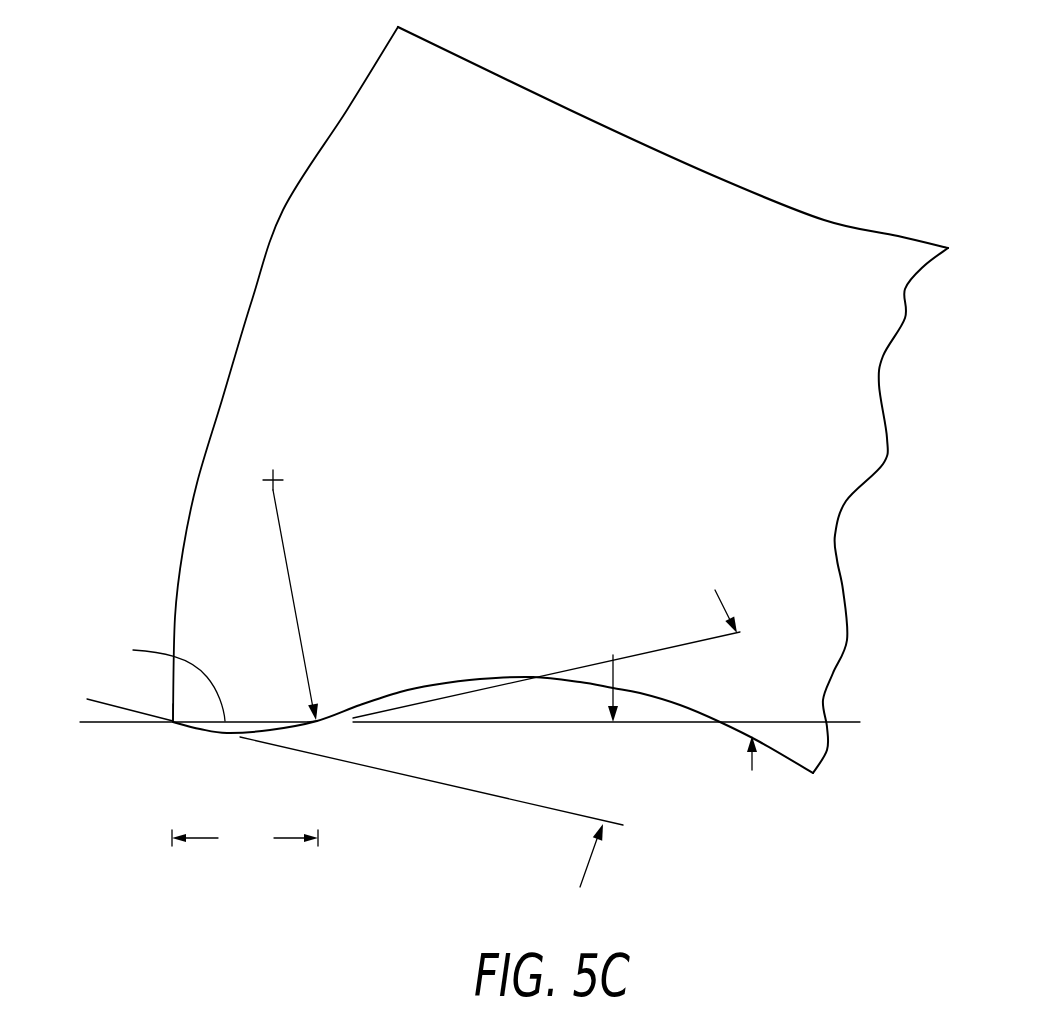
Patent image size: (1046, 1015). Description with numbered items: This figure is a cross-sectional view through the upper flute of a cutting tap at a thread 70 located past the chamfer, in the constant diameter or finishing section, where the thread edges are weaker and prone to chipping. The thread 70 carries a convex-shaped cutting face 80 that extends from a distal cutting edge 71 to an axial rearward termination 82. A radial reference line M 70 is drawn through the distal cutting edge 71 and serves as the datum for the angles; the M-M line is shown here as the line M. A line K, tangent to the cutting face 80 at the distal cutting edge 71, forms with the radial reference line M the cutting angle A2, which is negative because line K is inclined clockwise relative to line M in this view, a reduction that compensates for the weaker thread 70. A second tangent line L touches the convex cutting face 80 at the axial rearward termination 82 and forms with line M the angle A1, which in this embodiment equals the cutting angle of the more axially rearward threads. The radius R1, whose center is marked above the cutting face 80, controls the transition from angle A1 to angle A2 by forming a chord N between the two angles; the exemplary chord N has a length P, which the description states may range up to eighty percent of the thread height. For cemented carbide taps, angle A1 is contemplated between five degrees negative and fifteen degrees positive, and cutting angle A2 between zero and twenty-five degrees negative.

The thread 70 is at (378, 87).
The distal cutting edge 71 is at (171, 727).
The convex-shaped cutting face 80 is at (220, 731).
The axial rearward termination 82 is at (317, 720).
The radius R1 is at (292, 591).
The radial reference line M is at (469, 723).
The line tangent to the cutting face at the distal cutting edge K is at (350, 764).
The line tangent to the convex cutting face at the axial rearward termination L is at (557, 667).
The chord N is at (164, 678).
The angle A1 is at (672, 639).
The cutting angle A2 is at (668, 811).
The length of chord P is at (245, 839).